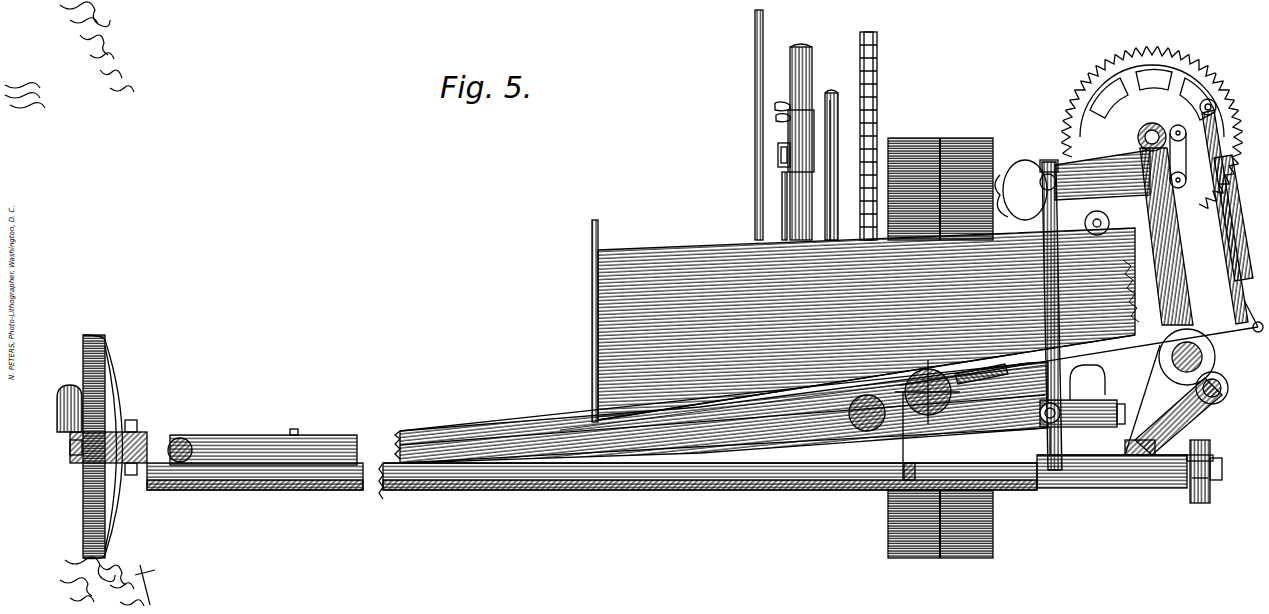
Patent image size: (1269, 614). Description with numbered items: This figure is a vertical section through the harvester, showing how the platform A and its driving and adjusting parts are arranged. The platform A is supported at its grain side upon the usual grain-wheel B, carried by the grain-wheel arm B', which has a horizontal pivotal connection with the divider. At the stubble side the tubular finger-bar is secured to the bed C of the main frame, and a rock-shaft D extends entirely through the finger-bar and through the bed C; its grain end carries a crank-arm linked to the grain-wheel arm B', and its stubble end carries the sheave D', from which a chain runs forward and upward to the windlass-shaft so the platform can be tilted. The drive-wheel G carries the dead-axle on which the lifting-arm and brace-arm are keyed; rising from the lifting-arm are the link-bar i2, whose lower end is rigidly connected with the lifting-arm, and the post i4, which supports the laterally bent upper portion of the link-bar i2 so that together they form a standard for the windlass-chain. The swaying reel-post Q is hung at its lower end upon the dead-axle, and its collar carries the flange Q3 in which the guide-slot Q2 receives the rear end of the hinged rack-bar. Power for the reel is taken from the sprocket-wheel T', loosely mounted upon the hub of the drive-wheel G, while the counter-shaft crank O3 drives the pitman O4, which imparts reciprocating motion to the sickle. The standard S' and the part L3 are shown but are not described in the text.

The platform A is at (592, 473).
The grain-wheel B is at (108, 438).
The grain-wheel arm B' is at (63, 408).
The bed C is at (1112, 471).
The rock-shaft D is at (1152, 275).
The sheave D' is at (1200, 502).
The drive-wheel G is at (940, 348).
The standard post S' is at (750, 125).
The reel-post Q is at (801, 142).
The guide-slot Q2 is at (776, 191).
The flange Q3 is at (779, 121).
The link-bar i2 is at (838, 198).
The post i4 is at (839, 165).
The sprocket-wheel T' is at (876, 136).
The crank O3 is at (1078, 427).
The pitman O4 is at (721, 420).
The stop piece L3 is at (1122, 414).